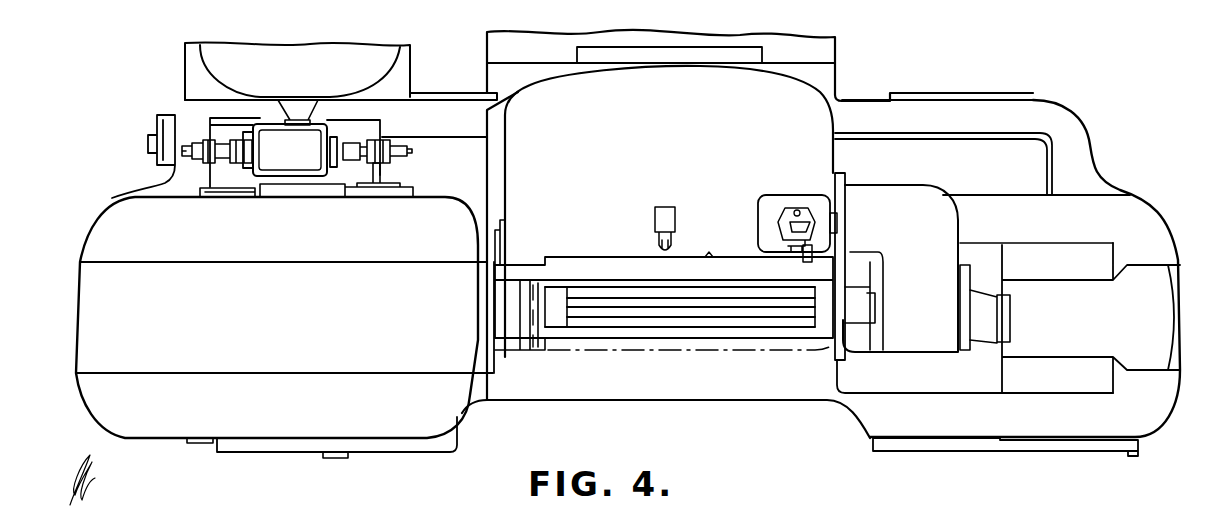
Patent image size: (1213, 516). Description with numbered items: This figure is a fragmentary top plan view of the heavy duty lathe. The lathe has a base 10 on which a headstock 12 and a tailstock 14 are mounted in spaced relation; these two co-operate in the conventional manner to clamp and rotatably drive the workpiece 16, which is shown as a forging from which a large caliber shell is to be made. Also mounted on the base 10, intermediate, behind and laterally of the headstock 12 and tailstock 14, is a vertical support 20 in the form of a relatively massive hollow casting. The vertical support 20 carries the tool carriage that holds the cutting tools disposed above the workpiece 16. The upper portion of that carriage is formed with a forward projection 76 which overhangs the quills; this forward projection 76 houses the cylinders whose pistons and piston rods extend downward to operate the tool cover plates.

The base 10 is at (1073, 152).
The headstock 12 is at (290, 314).
The tailstock 14 is at (990, 322).
The workpiece 16 is at (677, 345).
The vertical support 20 is at (684, 131).
The forward projection 76 is at (582, 268).